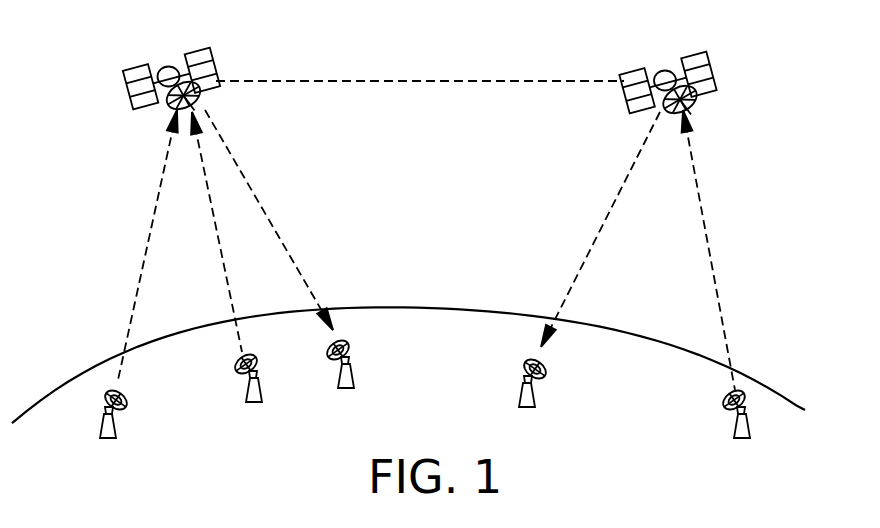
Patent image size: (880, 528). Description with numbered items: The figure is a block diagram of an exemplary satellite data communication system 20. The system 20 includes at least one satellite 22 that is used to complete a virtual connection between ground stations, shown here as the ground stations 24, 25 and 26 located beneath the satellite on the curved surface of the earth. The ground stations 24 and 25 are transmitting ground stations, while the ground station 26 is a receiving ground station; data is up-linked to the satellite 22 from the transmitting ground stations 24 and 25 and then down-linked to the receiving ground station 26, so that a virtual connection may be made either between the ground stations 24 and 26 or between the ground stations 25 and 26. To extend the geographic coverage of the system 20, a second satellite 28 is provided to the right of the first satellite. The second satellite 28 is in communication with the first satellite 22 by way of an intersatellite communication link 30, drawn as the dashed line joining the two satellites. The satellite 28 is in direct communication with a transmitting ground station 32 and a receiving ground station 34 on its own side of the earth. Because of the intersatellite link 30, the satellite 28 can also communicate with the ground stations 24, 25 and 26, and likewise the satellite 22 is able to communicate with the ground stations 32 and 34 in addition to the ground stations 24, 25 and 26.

The satellite communication system 20 is at (430, 201).
The satellite 22 is at (128, 87).
The ground station 24 is at (252, 402).
The ground station 25 is at (118, 415).
The ground station 26 is at (355, 383).
The second satellite 28 is at (712, 70).
The intersatellite communication link 30 is at (448, 82).
The transmitting ground station 32 is at (735, 432).
The receiving ground station 34 is at (537, 381).